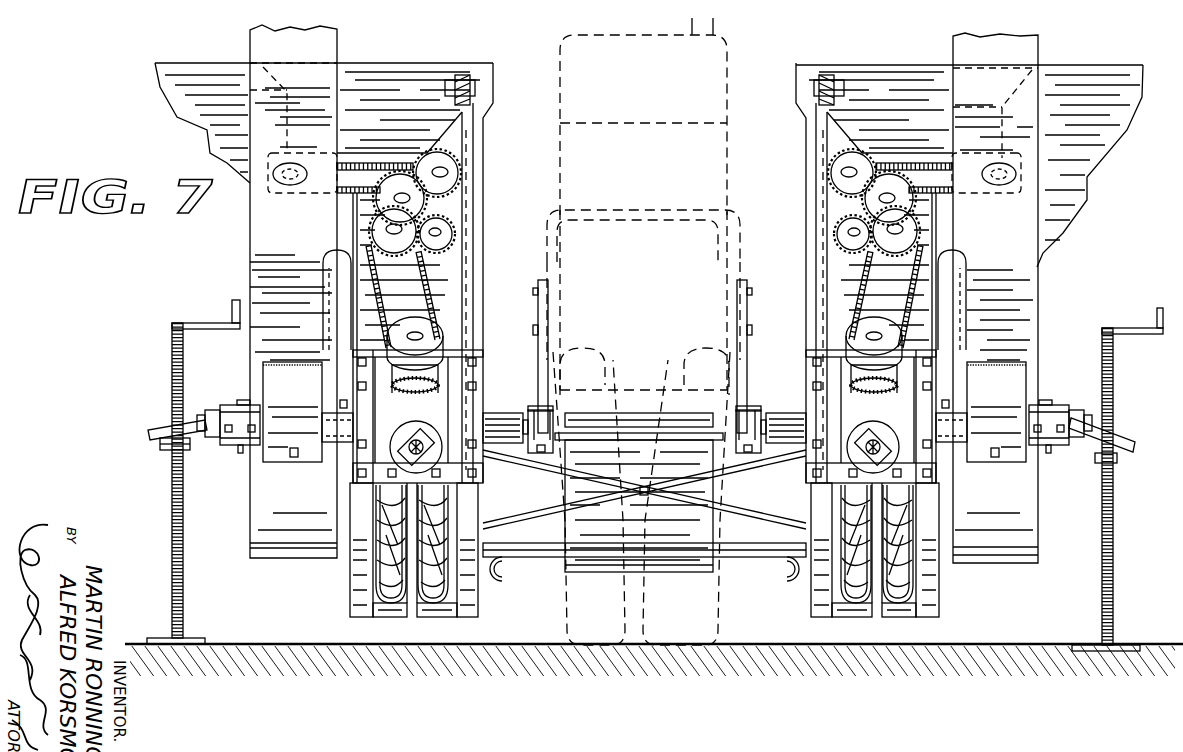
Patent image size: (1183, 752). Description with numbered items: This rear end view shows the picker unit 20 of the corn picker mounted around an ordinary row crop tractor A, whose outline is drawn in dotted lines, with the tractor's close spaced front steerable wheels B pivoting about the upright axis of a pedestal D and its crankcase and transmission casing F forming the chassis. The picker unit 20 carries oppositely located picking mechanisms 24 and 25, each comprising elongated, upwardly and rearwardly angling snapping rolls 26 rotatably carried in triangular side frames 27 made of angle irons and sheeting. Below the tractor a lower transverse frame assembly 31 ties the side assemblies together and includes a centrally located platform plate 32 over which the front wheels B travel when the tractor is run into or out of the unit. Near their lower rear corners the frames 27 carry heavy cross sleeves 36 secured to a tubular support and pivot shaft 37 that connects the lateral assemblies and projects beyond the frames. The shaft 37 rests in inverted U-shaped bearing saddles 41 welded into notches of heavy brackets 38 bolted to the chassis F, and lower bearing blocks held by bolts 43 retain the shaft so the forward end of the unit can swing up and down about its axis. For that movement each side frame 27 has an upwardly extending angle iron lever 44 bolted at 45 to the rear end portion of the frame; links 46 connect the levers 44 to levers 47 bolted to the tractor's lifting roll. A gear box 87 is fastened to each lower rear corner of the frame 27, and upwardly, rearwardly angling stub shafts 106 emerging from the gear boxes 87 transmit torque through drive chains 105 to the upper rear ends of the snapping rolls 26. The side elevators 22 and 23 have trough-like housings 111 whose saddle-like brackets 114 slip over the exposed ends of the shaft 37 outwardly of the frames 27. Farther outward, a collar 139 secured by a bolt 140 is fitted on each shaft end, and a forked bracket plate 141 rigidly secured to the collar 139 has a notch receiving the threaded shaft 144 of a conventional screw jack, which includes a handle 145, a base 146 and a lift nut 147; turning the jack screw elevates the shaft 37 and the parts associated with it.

The picker unit 20 is at (1127, 45).
The side elevator 22 is at (1049, 285).
The side elevator 23 is at (244, 239).
The picking mechanism 24 is at (868, 630).
The picking mechanism 25 is at (407, 630).
The snapping rolls 26 is at (427, 562).
The side frame 27 is at (353, 510).
The lower transverse frame assembly 31 is at (518, 568).
The platform plate 32 is at (590, 573).
The cross sleeves 36 is at (508, 413).
The cross shaft 37 is at (700, 450).
The bracket 38 is at (537, 349).
The bearing saddles 41 is at (545, 410).
The bolts 43 is at (533, 452).
The lever 44 is at (478, 198).
The bolt 45 is at (478, 360).
The links 46 is at (468, 72).
The levers 47 is at (164, 452).
The gear box 87 is at (390, 442).
The drive chains 105 is at (336, 252).
The stub shafts 106 is at (436, 334).
The trough-like housing 111 is at (265, 258).
The saddle-like brackets 114 is at (280, 407).
The collar 139 is at (228, 446).
The bolt 140 is at (240, 453).
The forked bracket plate 141 is at (157, 428).
The threaded shaft 144 is at (184, 577).
The handle 145 is at (190, 322).
The base 146 is at (1097, 645).
The lift nut 147 is at (1097, 460).
The tractor A is at (727, 98).
The steerable wheels B is at (613, 647).
The pedestal D is at (665, 380).
The crankcase and transmission casing F is at (727, 313).